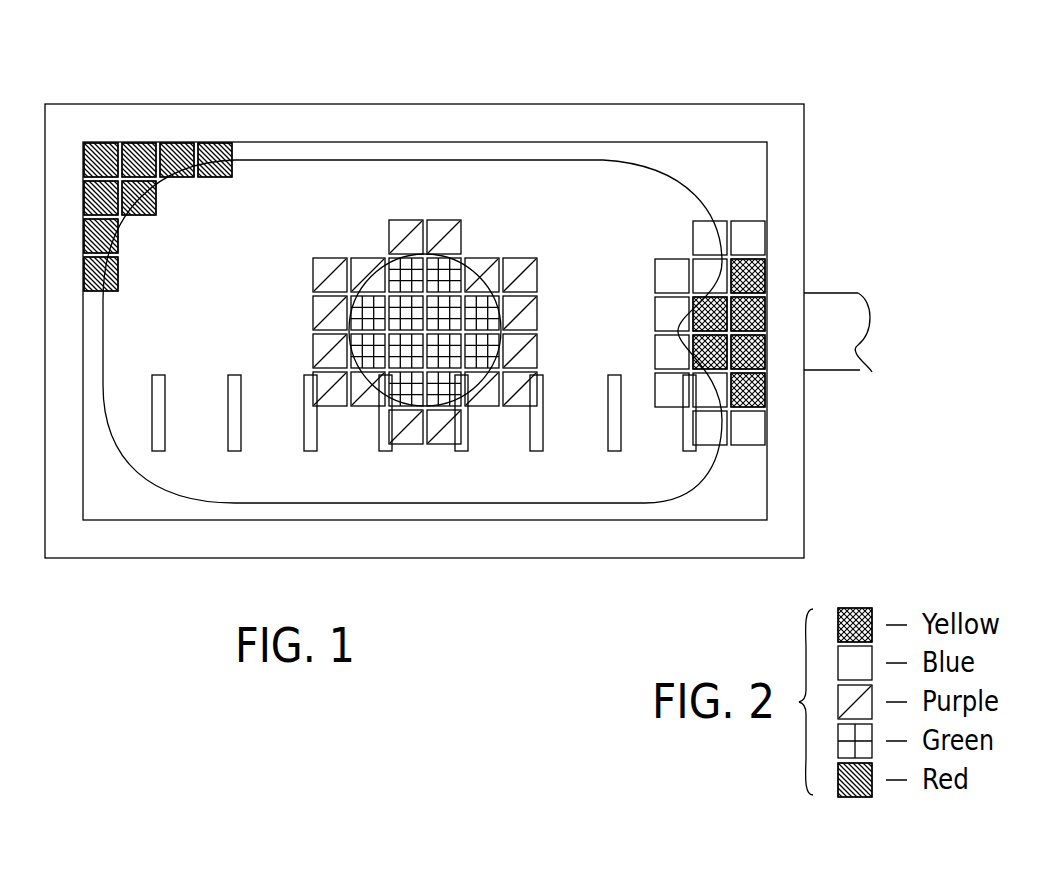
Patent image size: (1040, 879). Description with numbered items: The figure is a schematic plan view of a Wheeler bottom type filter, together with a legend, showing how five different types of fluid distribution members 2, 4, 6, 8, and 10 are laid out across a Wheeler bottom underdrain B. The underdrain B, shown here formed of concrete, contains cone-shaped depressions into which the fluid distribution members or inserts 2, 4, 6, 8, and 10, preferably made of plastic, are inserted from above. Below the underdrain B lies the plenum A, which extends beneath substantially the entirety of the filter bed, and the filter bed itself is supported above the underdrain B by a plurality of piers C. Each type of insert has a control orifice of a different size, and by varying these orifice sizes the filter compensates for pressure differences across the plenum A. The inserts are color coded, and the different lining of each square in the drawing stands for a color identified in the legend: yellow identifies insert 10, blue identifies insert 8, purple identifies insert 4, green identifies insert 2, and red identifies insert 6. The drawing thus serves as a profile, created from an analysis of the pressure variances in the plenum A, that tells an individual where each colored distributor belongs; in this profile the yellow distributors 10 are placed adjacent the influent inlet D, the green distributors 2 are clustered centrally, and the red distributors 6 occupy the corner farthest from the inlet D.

The fluid distribution member 2 is at (490, 320).
The fluid distribution member 4 is at (394, 233).
The fluid distribution member 6 is at (103, 150).
The fluid distribution member 8 is at (698, 232).
The fluid distribution member 10 is at (760, 272).
The plenum A is at (216, 293).
The Wheeler bottom underdrain B is at (118, 505).
The pier C is at (165, 438).
The influent inlet D is at (880, 318).